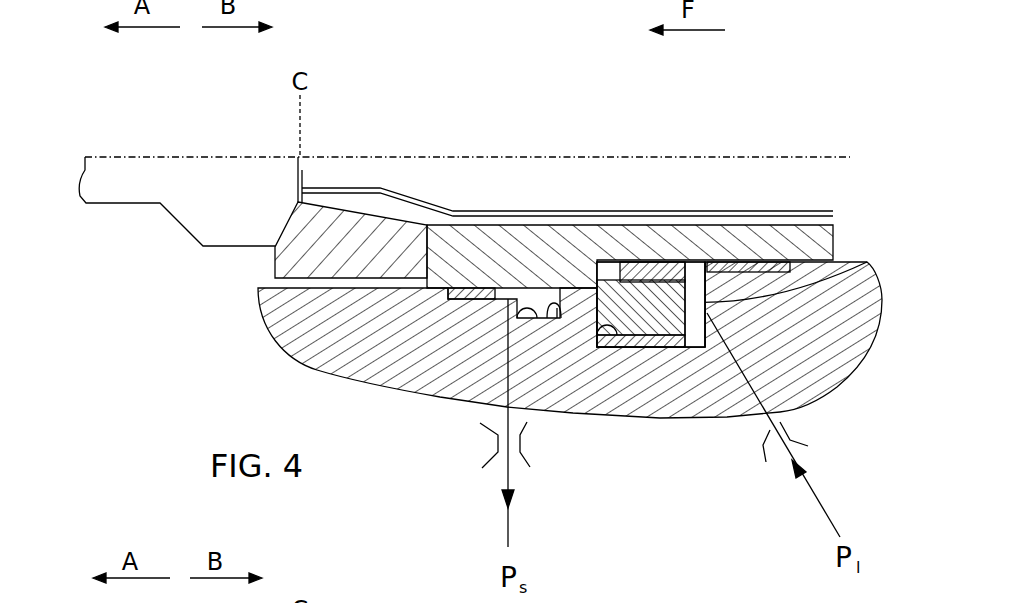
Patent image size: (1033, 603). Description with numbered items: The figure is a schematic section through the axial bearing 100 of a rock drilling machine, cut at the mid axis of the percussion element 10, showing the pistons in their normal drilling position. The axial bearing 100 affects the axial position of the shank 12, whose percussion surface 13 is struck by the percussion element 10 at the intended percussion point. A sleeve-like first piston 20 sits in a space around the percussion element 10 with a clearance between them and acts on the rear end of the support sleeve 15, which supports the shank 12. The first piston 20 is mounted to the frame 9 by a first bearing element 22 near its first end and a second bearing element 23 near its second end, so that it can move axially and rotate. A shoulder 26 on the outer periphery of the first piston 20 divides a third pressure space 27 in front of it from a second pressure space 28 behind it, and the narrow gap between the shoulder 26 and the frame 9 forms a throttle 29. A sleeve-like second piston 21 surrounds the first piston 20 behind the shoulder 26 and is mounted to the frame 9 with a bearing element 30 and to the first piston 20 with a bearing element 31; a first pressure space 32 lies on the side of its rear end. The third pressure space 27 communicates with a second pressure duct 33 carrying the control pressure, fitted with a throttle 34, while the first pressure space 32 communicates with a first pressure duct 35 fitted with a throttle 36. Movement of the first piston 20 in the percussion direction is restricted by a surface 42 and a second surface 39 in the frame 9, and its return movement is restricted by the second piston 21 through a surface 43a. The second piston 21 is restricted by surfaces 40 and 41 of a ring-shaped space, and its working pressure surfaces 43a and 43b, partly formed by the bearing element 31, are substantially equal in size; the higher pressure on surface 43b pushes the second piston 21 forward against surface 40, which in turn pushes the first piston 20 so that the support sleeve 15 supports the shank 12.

The frame 9 is at (290, 330).
The percussion element 10 is at (423, 192).
The shank 12 is at (211, 201).
The percussion surface 13 is at (302, 174).
The support sleeve 15 is at (273, 263).
The first piston 20 is at (807, 240).
The second piston 21 is at (840, 277).
The first bearing element 22 is at (455, 300).
The second bearing element 23 is at (760, 266).
The shoulder 26 is at (595, 335).
The third pressure space 27 is at (538, 300).
The second pressure space 28 is at (618, 268).
The throttle 29 is at (572, 325).
The bearing element 30 is at (643, 340).
The bearing element 31 is at (643, 263).
The first pressure space 32 is at (695, 280).
The second pressure duct 33 is at (507, 517).
The throttle 34 is at (490, 442).
The first pressure duct 35 is at (815, 500).
The throttle 36 is at (765, 443).
The second surface 39 is at (512, 316).
The surface 40 is at (617, 335).
The surface 41 is at (683, 337).
The surface 42 is at (532, 318).
The surface 43a is at (575, 317).
The surface 43b is at (707, 313).
The axial bearing 100 is at (831, 117).